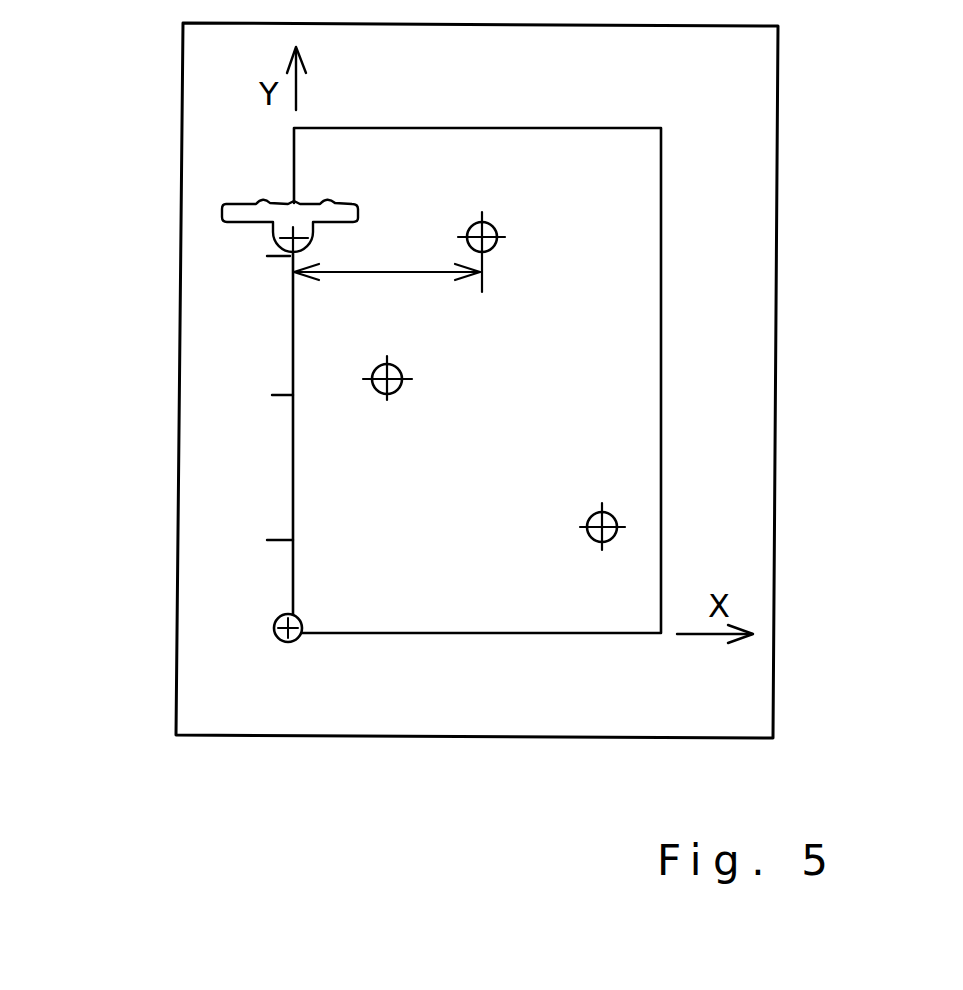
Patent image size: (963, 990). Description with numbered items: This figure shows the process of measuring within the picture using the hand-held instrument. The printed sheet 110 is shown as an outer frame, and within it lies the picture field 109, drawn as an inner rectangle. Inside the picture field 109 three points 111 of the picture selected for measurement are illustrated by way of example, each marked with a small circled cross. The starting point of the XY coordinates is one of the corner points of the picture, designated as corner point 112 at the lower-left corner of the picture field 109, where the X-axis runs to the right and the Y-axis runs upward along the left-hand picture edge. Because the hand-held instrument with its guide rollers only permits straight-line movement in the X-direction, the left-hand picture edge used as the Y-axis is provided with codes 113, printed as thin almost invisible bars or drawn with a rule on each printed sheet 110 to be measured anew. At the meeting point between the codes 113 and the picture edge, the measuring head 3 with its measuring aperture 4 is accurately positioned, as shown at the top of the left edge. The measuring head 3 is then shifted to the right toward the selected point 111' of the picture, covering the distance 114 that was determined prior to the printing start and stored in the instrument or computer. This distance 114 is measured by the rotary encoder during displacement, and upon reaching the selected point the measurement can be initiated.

The measuring head 3 is at (288, 218).
The measuring aperture 4 is at (280, 239).
The picture field 109 is at (347, 570).
The printed sheet 110 is at (238, 648).
The points of the picture 111 is at (494, 543).
The selected point of the picture 111' is at (540, 243).
The corner point of the picture 112 is at (283, 641).
The codes 113 is at (270, 536).
The distance 114 is at (380, 272).